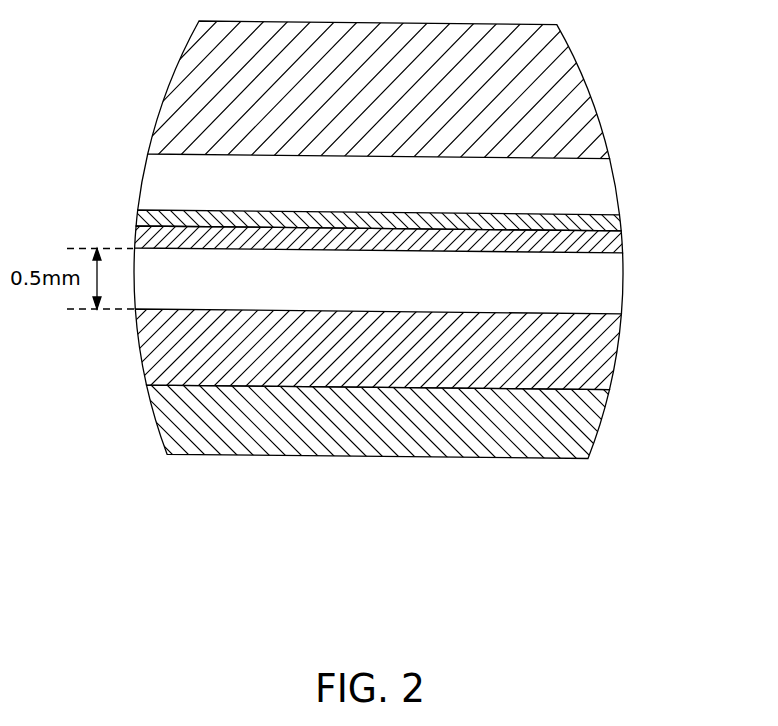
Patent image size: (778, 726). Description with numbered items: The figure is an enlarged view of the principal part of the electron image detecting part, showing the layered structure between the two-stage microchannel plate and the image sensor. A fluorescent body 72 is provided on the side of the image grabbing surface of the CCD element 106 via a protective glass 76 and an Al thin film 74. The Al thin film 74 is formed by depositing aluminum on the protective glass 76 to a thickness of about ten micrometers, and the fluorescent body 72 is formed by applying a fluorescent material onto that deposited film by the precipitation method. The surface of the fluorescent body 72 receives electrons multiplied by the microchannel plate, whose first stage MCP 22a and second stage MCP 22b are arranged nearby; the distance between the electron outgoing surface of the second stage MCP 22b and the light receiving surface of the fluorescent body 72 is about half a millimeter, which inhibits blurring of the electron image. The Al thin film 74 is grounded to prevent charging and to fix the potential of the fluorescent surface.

The CCD element 106 is at (570, 108).
The protective glass 76 is at (597, 192).
The Al thin film 74 is at (612, 227).
The fluorescent body 72 is at (603, 243).
The second stage MCP 22b is at (603, 345).
The first stage MCP 22a is at (582, 418).